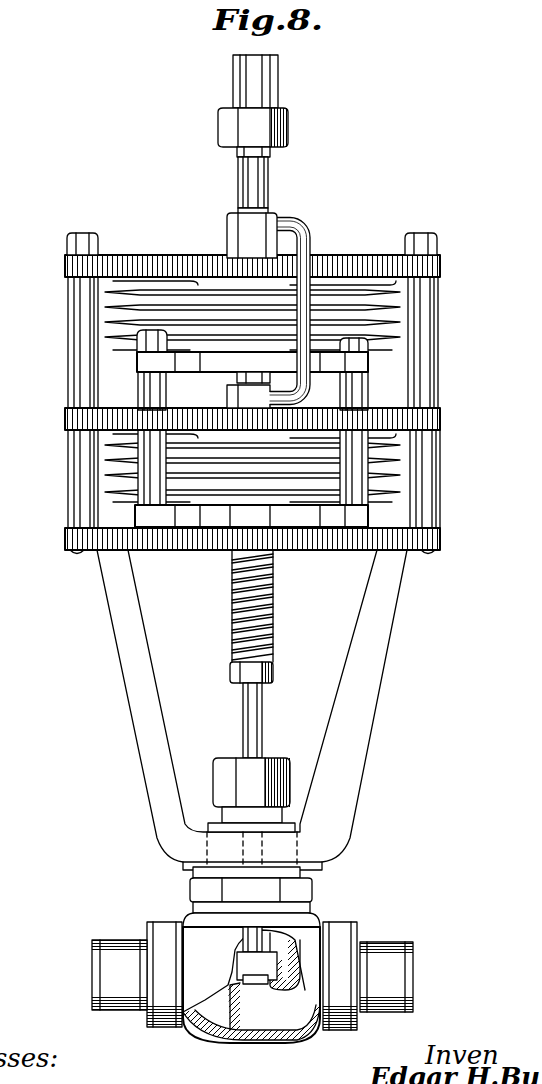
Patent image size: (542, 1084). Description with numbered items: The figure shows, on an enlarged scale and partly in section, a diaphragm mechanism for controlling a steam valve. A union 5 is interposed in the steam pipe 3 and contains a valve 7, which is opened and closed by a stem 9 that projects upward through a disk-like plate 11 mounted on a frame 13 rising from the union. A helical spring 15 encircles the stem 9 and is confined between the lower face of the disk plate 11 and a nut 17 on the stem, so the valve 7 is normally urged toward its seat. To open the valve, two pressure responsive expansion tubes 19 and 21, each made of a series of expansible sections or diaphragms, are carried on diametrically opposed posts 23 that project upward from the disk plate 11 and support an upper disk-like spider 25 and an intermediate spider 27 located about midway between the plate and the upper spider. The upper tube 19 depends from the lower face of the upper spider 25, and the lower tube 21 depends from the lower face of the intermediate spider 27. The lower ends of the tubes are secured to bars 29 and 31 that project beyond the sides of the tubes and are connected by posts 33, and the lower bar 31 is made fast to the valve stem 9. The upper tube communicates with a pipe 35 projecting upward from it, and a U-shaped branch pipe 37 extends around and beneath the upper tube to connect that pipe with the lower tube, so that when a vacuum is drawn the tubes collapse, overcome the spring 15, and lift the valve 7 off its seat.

The pipe 3 is at (388, 945).
The union 5 is at (300, 925).
The valve 7 is at (243, 958).
The stem 9 is at (245, 719).
The disk-like plate 11 is at (310, 543).
The frame 13 is at (131, 690).
The helical spring 15 is at (273, 603).
The nut 17 is at (273, 672).
The expansion tube 19 is at (105, 339).
The expansion tube 21 is at (105, 491).
The posts 23 is at (80, 297).
The upper disk-like spider 25 is at (176, 262).
The intermediate spider 27 is at (65, 416).
The bar 29 is at (215, 363).
The lower bar 31 is at (203, 517).
The posts 33 is at (148, 393).
The pipe 35 is at (265, 176).
The U-shaped branch pipe 37 is at (310, 238).